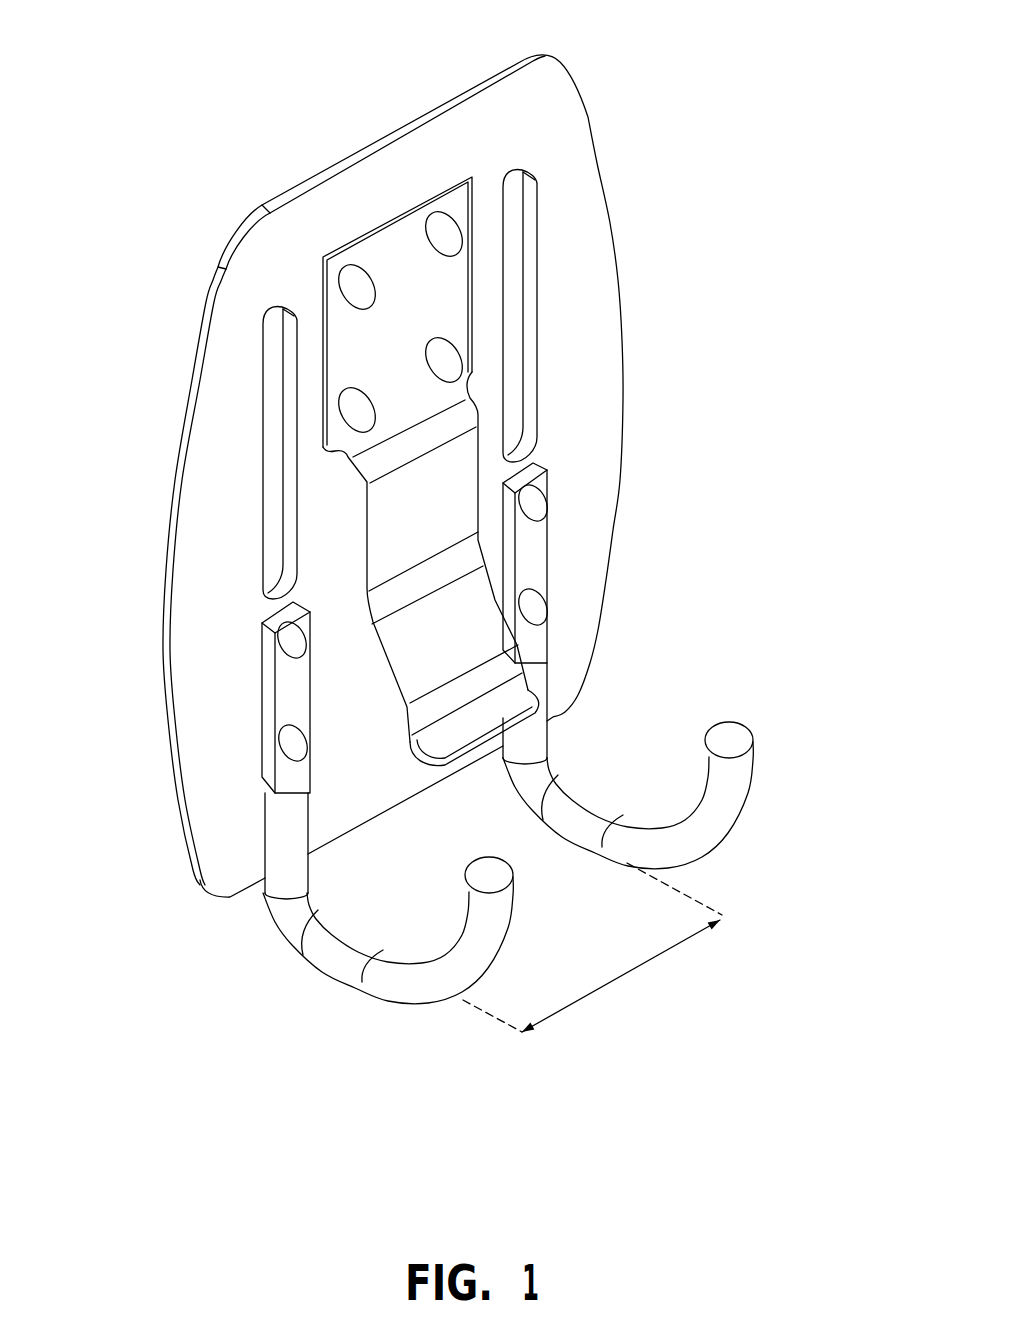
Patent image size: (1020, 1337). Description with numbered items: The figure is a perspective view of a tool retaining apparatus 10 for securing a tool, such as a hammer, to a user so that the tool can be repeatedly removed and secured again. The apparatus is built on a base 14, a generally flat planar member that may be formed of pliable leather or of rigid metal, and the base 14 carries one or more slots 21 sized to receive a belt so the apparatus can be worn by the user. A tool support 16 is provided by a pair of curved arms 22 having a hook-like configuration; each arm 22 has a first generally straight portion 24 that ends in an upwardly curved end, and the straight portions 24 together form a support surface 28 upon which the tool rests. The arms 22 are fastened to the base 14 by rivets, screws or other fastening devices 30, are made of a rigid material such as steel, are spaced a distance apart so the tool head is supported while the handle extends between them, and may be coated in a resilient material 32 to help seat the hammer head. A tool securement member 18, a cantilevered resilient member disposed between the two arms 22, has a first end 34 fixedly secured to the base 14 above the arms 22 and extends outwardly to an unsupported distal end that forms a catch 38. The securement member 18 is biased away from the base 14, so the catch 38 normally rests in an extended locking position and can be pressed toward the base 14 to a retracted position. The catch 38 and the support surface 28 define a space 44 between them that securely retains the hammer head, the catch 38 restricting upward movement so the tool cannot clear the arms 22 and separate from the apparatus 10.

The tool retaining apparatus 10 is at (638, 75).
The base 14 is at (187, 433).
The tool support 16 is at (370, 997).
The tool securement member 18 is at (457, 623).
The slot 21 is at (527, 257).
The curved arm 22 is at (318, 957).
The first generally straight portion 24 is at (440, 997).
The support surface 28 is at (306, 899).
The fastening device 30 is at (295, 747).
The resilient material 32 is at (493, 902).
The first end 34 is at (412, 324).
The catch 38 is at (525, 702).
The space 44 is at (553, 882).